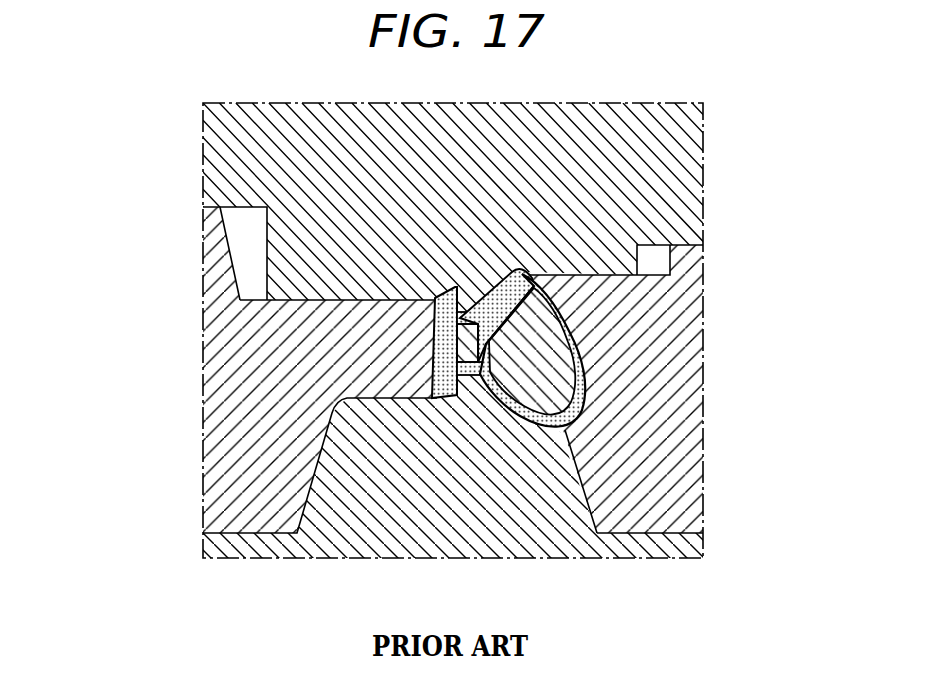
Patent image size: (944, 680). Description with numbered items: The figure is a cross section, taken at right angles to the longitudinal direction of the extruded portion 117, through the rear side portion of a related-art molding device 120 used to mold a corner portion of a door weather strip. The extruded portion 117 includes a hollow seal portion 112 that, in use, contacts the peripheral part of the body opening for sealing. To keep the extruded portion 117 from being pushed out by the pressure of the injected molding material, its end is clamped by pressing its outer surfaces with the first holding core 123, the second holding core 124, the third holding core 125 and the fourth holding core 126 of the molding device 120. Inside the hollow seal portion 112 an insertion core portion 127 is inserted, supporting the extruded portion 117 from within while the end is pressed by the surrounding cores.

The molding device 120 is at (180, 159).
The first holding core 123 is at (677, 143).
The extruded portion 117 is at (500, 282).
The hollow seal portion 112 is at (568, 332).
The insertion core portion 127 is at (580, 368).
The second holding core 124 is at (668, 451).
The fourth holding core 126 is at (242, 360).
The third holding core 125 is at (397, 517).